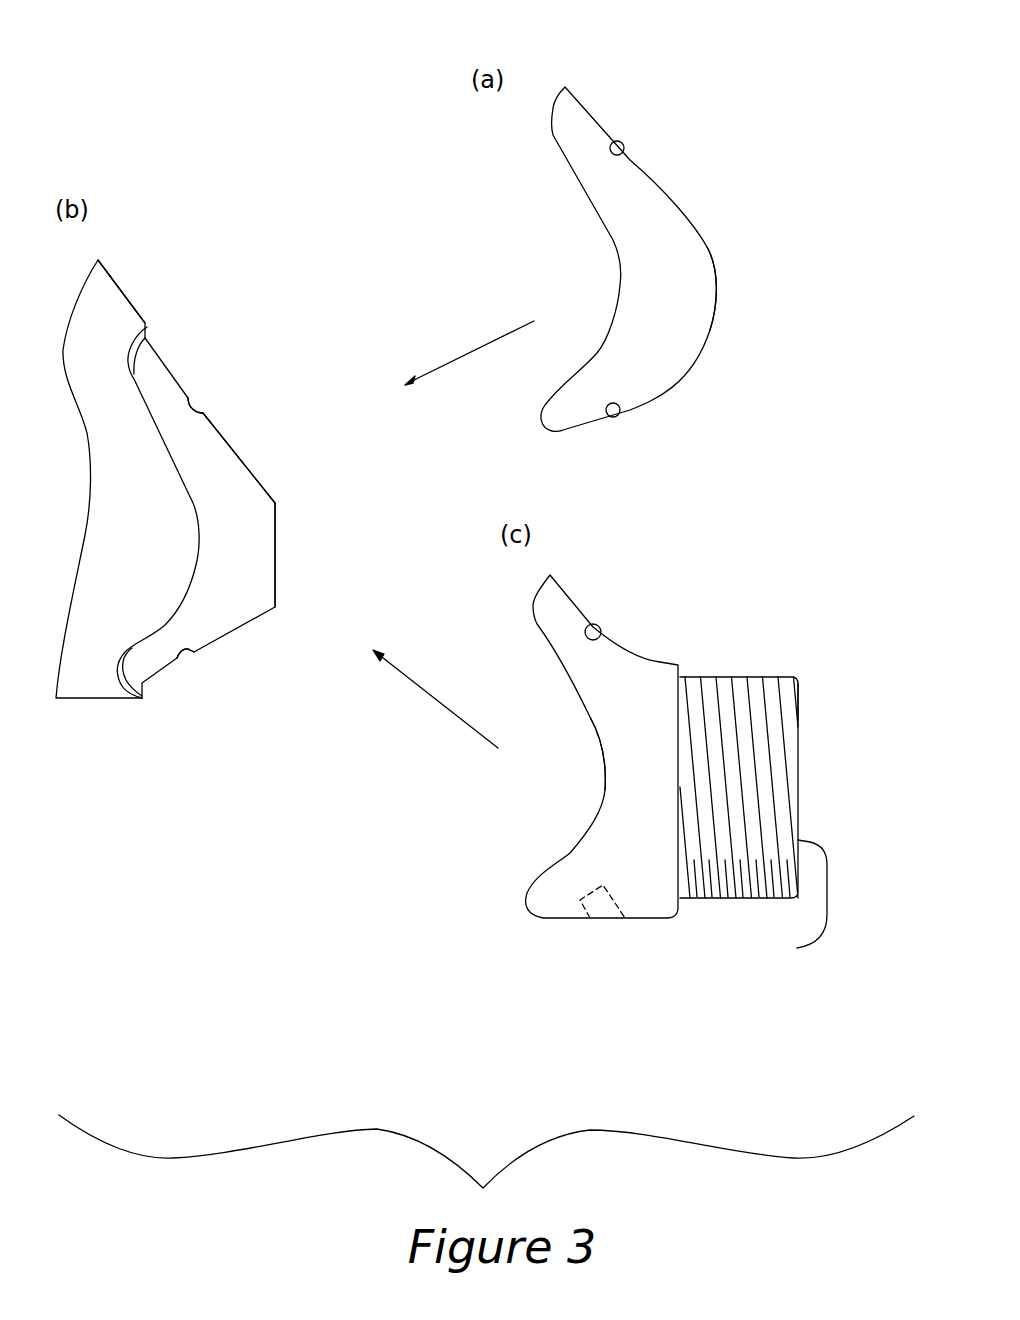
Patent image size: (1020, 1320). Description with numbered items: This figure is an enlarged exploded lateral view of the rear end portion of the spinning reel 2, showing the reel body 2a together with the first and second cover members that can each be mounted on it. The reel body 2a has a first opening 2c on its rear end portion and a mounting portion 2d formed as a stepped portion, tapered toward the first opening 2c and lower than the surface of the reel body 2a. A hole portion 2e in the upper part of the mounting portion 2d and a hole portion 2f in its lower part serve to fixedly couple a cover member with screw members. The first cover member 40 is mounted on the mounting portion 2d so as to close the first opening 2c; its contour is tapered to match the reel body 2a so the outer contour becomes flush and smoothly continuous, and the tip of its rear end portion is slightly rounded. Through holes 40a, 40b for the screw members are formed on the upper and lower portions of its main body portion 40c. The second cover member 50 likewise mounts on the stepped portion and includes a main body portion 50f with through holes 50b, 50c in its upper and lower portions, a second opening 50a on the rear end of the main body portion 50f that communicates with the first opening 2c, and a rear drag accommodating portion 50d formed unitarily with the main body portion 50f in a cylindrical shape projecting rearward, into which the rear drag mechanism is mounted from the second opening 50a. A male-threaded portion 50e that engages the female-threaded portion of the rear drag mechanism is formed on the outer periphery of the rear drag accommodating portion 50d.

The latch member 2 is at (135, 258).
The reel body 2a is at (125, 313).
The first opening 2c is at (275, 557).
The mounting portion 2d is at (225, 435).
The hole portion 2e is at (192, 400).
The hole portion 2f is at (180, 657).
The first cover member 40 is at (695, 191).
The through hole 40a is at (622, 147).
The through hole 40b is at (613, 417).
The main body portion 40c is at (695, 316).
The second cover member 50 is at (694, 667).
The second opening 50a is at (783, 901).
The through hole 50b is at (601, 629).
The through hole 50c is at (597, 907).
The rear drag accommodating portion 50d is at (742, 677).
The male-threaded portion 50e is at (790, 703).
The main body portion 50f is at (610, 825).